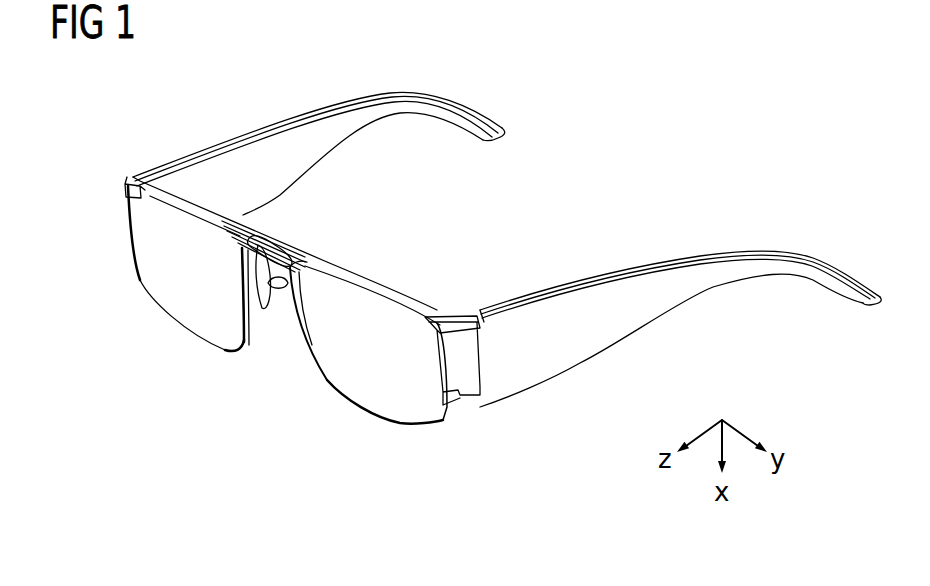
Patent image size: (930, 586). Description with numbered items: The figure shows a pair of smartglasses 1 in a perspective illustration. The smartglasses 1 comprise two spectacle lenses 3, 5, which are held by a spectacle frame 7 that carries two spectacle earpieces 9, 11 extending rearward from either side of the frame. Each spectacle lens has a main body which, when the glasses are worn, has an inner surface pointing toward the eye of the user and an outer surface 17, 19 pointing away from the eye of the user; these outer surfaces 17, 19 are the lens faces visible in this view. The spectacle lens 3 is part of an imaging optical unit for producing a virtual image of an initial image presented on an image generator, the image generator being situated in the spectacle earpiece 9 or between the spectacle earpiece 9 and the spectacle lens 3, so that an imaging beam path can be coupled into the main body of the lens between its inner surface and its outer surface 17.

The smartglasses 1 is at (546, 100).
The spectacle lens 3 is at (165, 318).
The spectacle lens 5 is at (278, 359).
The spectacle frame 7 is at (293, 247).
The spectacle earpiece 9 is at (258, 148).
The spectacle earpiece 11 is at (540, 300).
The outer surface 17 is at (150, 279).
The outer surface 19 is at (360, 400).